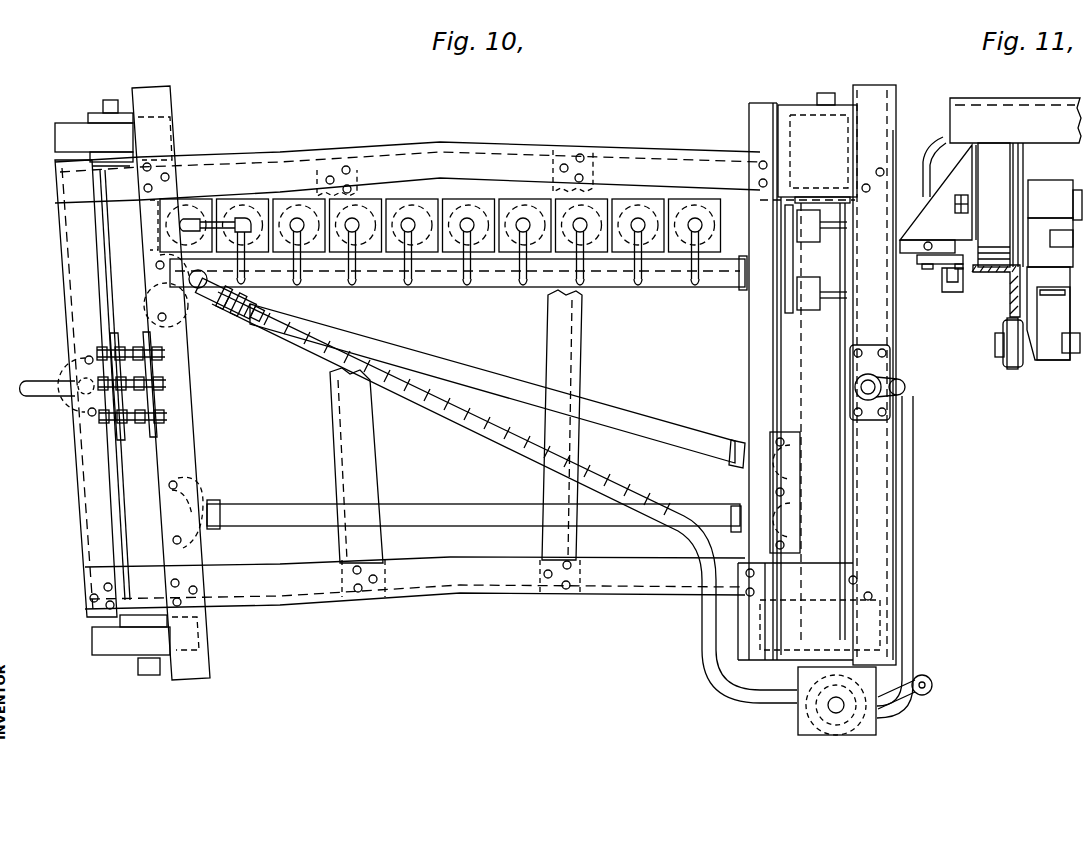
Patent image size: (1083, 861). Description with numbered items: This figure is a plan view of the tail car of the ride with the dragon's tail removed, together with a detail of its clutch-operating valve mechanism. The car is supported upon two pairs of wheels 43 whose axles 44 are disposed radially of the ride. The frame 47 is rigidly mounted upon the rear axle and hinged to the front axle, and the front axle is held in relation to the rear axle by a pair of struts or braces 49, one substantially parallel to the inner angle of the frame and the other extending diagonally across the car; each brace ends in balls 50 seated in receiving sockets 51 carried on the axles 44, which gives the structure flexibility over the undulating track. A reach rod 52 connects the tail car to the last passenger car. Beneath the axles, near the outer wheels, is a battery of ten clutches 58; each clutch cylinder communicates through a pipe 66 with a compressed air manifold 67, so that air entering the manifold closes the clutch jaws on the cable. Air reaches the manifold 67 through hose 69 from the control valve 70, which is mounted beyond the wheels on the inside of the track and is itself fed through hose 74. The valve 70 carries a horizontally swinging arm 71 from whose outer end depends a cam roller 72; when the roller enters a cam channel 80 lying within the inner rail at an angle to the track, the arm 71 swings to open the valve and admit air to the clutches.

In FIG. 10, the wheels 43 is at (68, 127).
In FIG. 11, the wheels 43 is at (1000, 165).
In FIG. 10, the axles 44 is at (810, 388).
In FIG. 10, the frame 47 is at (205, 665).
In FIG. 10, the struts or braces 49 is at (465, 362).
In FIG. 10, the balls 50 is at (187, 328).
In FIG. 10, the receiving sockets 51 is at (185, 353).
In FIG. 10, the reach rod 52 is at (33, 395).
In FIG. 10, the clutches 58 is at (373, 198).
In FIG. 10, the pipe 66 is at (357, 268).
In FIG. 10, the compressed air manifold 67 is at (442, 286).
In FIG. 10, the hose 69 is at (617, 481).
In FIG. 10, the control valve 70 is at (858, 725).
In FIG. 10, the swinging arm 71 is at (912, 698).
In FIG. 10, the cam roller 72 is at (932, 683).
In FIG. 11, the cam roller 72 is at (962, 274).
In FIG. 10, the hose 74 is at (910, 552).
In FIG. 11, the hose 74 is at (910, 257).
In FIG. 11, the cam channel 80 is at (952, 293).